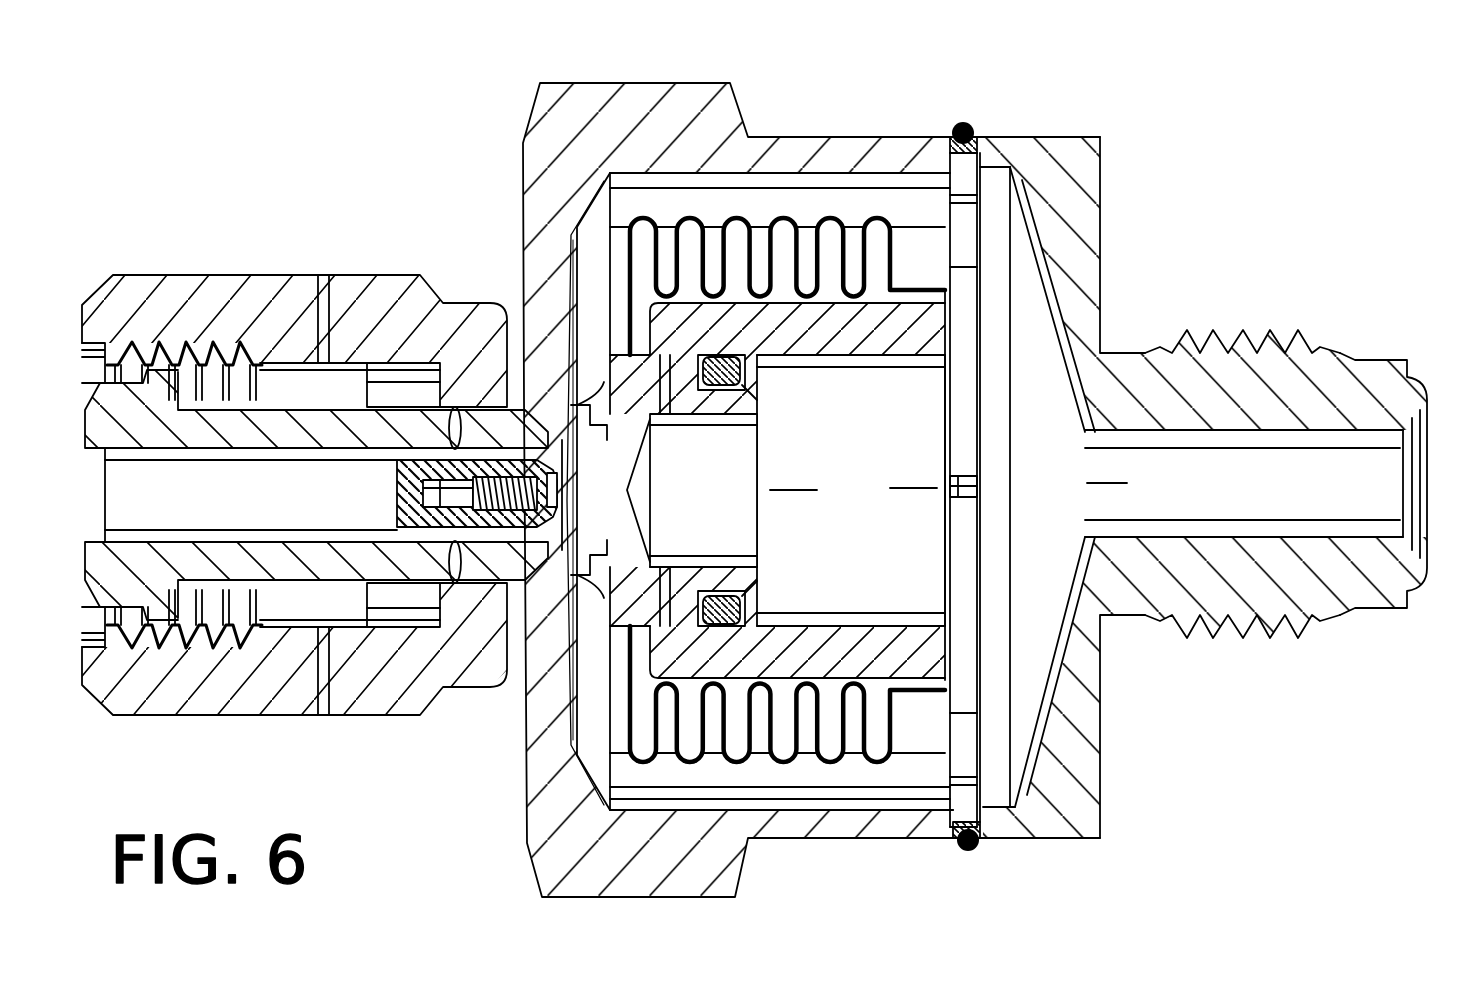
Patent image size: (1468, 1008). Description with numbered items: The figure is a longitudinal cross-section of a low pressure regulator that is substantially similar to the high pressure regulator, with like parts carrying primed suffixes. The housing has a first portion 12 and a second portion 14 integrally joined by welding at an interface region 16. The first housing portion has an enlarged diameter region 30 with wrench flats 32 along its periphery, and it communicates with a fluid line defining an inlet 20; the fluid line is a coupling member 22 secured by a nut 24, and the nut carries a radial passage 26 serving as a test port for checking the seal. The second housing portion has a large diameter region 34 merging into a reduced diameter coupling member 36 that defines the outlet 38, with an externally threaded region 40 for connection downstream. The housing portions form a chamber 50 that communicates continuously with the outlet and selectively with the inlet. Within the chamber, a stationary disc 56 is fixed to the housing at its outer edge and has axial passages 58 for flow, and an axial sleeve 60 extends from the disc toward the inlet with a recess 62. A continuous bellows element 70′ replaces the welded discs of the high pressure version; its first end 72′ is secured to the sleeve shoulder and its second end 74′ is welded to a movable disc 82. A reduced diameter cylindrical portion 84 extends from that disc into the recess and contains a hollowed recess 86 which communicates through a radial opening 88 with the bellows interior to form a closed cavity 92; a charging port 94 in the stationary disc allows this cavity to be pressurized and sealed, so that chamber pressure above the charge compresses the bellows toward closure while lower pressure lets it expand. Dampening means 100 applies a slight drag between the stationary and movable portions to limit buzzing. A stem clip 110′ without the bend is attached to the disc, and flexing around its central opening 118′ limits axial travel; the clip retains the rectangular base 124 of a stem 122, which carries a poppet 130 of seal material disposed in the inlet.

The first portion 12 is at (545, 806).
The second portion 14 is at (1082, 757).
The interface region 16 is at (970, 125).
The inlet 20 is at (233, 492).
The coupling member 22 is at (190, 438).
The nut 24 is at (217, 287).
The radial passage 26 is at (345, 302).
The enlarged diameter region 30 is at (557, 137).
The wrench flats 32 is at (607, 83).
The large diameter region 34 is at (1078, 155).
The coupling member 36 is at (1323, 380).
The outlet 38 is at (1245, 432).
The externally threaded region 40 is at (1217, 343).
The chamber 50 is at (1068, 385).
The disc 56 is at (963, 590).
The axial passages 58 is at (972, 207).
The axial sleeve 60 is at (823, 617).
The recess 62 is at (850, 353).
The continuous bellows element 70′ is at (790, 217).
The first end of bellows 72′ is at (910, 685).
The second end of bellows 74′ is at (578, 712).
The disc 82 is at (527, 680).
The cylindrical portion 84 is at (748, 393).
The hollowed recess 86 is at (725, 567).
The radial opening 88 is at (665, 573).
The closed cavity 92 is at (851, 490).
The charging port 94 is at (977, 489).
The dampening means 100 is at (740, 390).
The stem clip 110′ is at (583, 385).
The central opening 118′ is at (628, 488).
The stem 122 is at (570, 524).
The rectangular base 124 is at (755, 490).
The poppet 130 is at (396, 481).